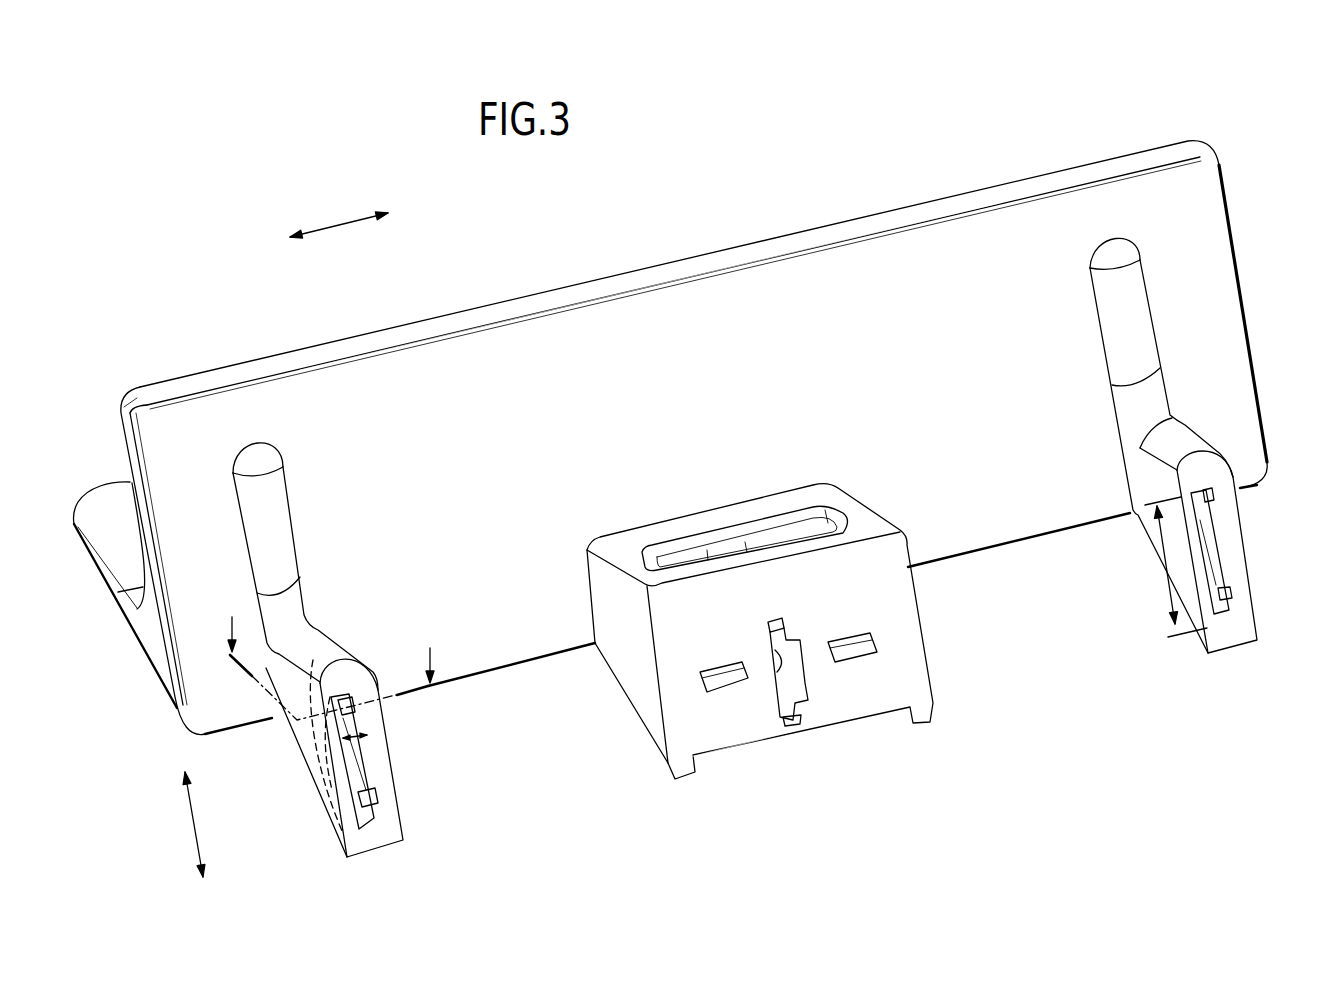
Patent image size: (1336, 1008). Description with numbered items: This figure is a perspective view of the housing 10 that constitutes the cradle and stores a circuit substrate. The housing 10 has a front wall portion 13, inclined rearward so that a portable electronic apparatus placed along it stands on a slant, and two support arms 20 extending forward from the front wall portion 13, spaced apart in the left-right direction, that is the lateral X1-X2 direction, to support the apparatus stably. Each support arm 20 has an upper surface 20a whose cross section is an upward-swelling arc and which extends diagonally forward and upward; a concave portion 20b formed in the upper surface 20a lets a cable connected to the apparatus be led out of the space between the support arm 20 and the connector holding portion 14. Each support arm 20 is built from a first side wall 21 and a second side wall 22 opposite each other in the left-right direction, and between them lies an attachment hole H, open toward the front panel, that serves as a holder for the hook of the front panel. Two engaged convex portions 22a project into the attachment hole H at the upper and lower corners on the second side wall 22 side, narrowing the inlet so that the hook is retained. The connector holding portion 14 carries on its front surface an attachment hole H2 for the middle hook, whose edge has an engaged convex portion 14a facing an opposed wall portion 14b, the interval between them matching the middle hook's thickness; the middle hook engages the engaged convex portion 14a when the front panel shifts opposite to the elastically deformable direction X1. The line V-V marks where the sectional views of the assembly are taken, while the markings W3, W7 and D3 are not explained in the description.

The housing 10 is at (673, 243).
The front wall portion 13 is at (840, 262).
The connector holding portion 14 is at (742, 504).
The engaged convex portion 14a is at (772, 630).
The opposed wall portion 14b is at (793, 655).
The support arm 20 is at (352, 625).
The upper surface 20a is at (1170, 443).
The concave portion 20b is at (283, 633).
The first side wall 21 is at (297, 733).
The second side wall 22 is at (380, 765).
The engaged convex portion 22a is at (360, 710).
The attachment hole H is at (350, 758).
The attachment hole H2 is at (790, 663).
The width W3 is at (1171, 567).
The width W7 is at (367, 740).
The line V- V is at (332, 653).
The elastically deformable direction X1 is at (322, 233).
The lateral direction X2 is at (398, 207).
The direction D3 is at (182, 824).